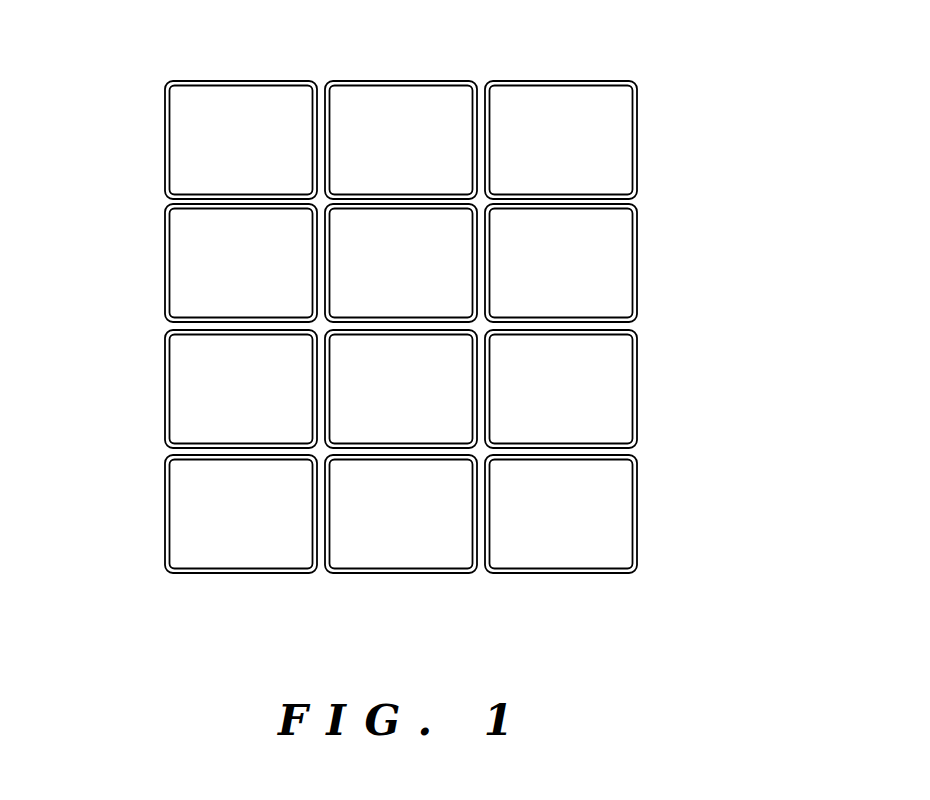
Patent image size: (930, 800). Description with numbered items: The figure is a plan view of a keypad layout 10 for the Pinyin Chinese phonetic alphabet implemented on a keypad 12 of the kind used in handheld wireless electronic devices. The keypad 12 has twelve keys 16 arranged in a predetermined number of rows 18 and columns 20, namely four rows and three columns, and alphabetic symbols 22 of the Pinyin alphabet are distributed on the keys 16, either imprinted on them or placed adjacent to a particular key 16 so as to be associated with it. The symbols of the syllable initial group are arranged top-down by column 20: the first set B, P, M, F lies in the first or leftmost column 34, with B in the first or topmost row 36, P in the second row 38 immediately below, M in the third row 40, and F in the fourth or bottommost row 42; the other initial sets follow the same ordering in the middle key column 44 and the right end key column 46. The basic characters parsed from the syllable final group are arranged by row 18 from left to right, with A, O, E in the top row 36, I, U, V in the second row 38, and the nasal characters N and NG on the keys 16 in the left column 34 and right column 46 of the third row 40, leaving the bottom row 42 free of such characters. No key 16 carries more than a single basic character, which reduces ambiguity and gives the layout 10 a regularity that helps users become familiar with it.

The keypad layout 10 is at (207, 727).
The keypad 12 is at (665, 628).
The keys 16 is at (290, 82).
The rows 18 is at (143, 140).
The columns 20 is at (236, 598).
The symbols 22 is at (212, 99).
The first or leftmost column 34 is at (200, 68).
The first or topmost row 36 is at (655, 148).
The second row 38 is at (655, 271).
The third row 40 is at (655, 395).
The fourth or bottommost row 42 is at (652, 521).
The middle key column 44 is at (360, 70).
The right end key column 46 is at (520, 70).